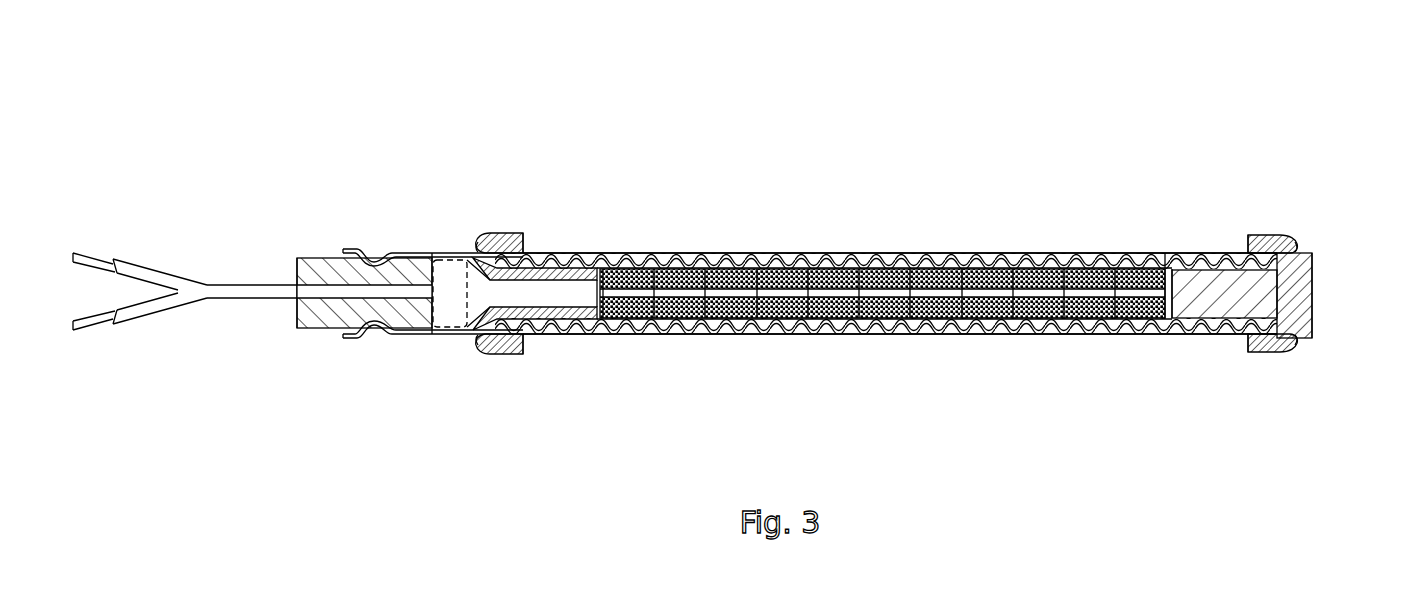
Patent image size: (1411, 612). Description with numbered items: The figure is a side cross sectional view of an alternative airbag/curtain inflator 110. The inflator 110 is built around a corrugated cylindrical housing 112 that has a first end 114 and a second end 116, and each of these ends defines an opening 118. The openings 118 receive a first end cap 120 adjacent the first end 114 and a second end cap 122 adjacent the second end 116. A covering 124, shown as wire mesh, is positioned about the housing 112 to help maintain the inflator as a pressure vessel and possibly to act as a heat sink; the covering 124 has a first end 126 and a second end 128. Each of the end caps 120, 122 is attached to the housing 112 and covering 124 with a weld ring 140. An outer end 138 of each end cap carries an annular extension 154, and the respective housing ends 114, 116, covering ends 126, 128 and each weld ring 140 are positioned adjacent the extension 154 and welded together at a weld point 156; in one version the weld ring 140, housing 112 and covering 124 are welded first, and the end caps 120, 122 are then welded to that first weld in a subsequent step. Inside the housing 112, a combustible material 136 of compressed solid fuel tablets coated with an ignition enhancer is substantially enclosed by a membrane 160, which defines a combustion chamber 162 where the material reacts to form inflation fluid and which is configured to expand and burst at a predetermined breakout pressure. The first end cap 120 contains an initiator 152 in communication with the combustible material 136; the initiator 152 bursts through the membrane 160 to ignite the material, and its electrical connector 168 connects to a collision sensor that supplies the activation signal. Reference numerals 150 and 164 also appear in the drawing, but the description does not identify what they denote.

The inflator 110 is at (1145, 128).
The corrugated cylindrical housing 112 is at (718, 252).
The first end 114 is at (531, 343).
The second end 116 is at (1238, 256).
The openings 118 is at (534, 240).
The first end cap 120 is at (425, 335).
The second end cap 122 is at (1310, 265).
The covering 124 is at (918, 250).
The first end 126 is at (555, 340).
The second end 128 is at (1225, 340).
The combustible material 136 is at (1047, 268).
The outer end 138 is at (297, 320).
The weld ring 140 is at (505, 235).
The retainer shell 150 is at (405, 335).
The initiator 152 is at (181, 278).
The annular extension 154 is at (473, 345).
The weld point 156 is at (473, 238).
The membrane 160 is at (612, 292).
The combustion chamber 162 is at (738, 300).
The ignition charge 164 is at (443, 267).
The electrical connector 168 is at (84, 330).